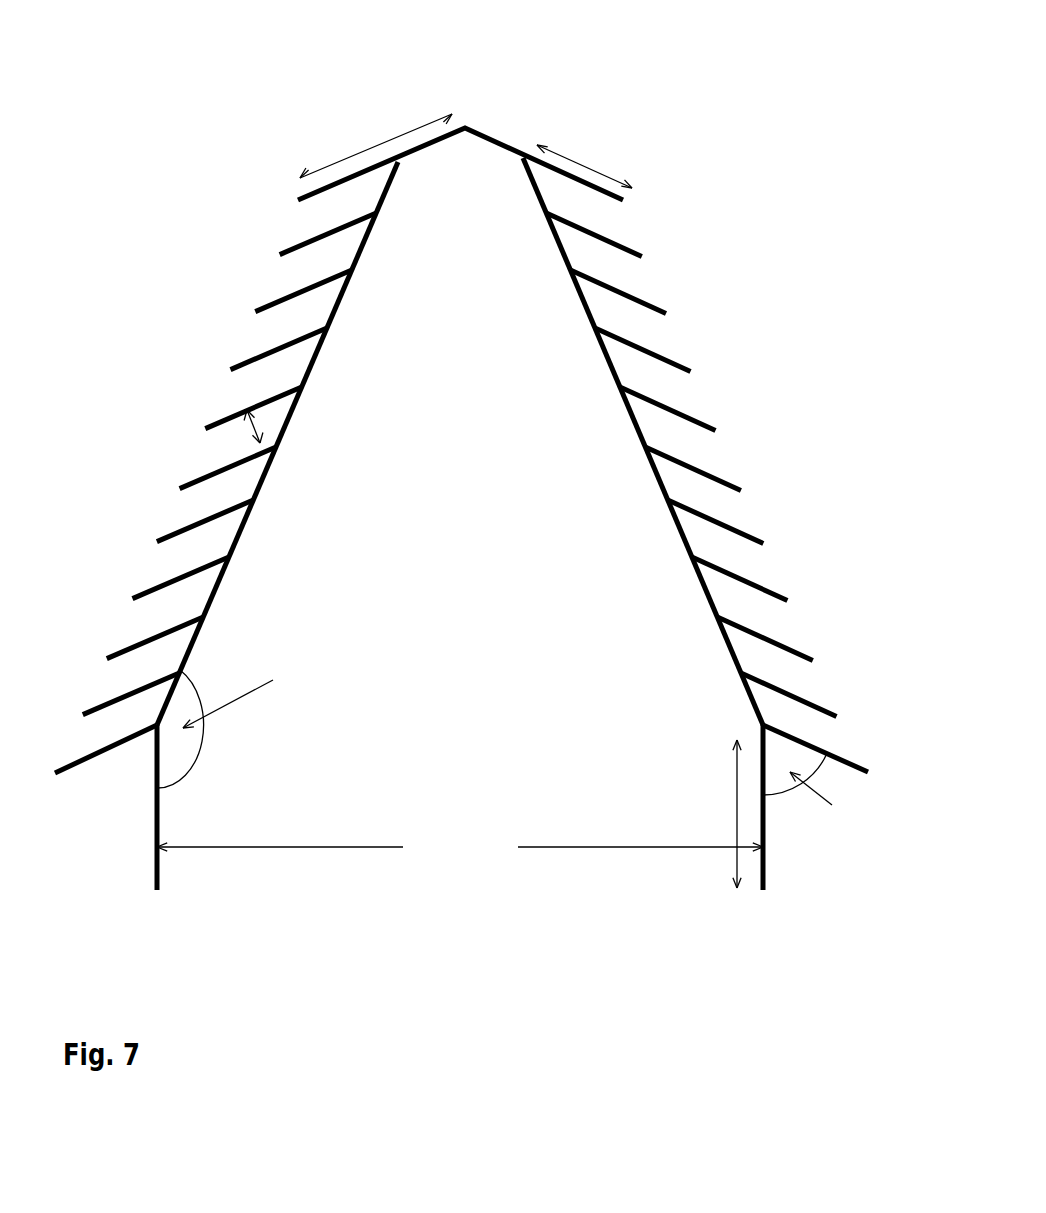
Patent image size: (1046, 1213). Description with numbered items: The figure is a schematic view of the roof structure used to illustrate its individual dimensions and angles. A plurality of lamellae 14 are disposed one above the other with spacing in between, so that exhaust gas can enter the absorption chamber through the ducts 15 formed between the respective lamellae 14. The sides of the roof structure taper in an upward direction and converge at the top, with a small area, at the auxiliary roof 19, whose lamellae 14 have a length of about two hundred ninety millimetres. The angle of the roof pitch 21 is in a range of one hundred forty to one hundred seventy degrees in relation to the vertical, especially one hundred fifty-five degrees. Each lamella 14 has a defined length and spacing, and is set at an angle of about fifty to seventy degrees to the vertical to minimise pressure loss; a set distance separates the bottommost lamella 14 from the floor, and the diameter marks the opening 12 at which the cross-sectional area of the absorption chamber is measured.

The opening 12 is at (530, 872).
The lamellae 14 is at (650, 298).
The ducts 15 is at (690, 443).
The auxiliary roof 19 is at (493, 137).
The roof pitch 21 is at (580, 298).